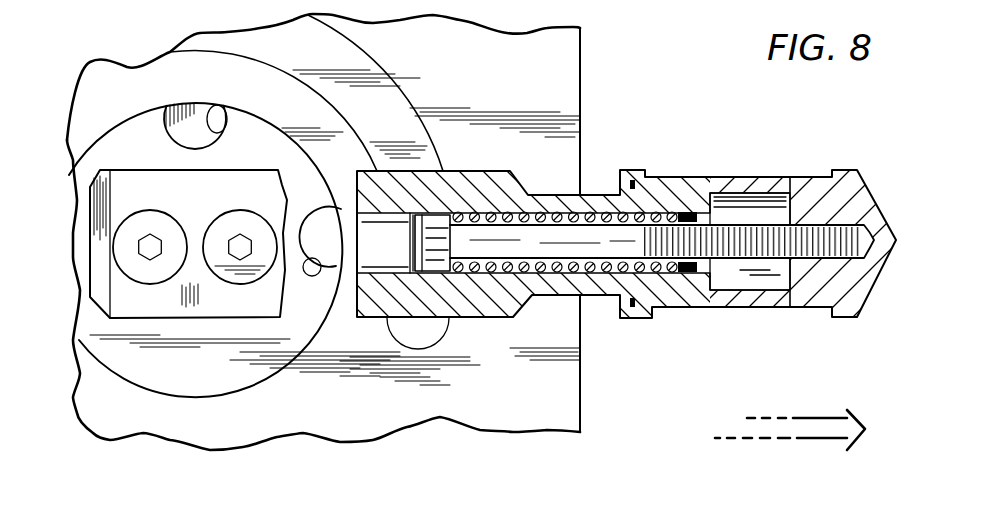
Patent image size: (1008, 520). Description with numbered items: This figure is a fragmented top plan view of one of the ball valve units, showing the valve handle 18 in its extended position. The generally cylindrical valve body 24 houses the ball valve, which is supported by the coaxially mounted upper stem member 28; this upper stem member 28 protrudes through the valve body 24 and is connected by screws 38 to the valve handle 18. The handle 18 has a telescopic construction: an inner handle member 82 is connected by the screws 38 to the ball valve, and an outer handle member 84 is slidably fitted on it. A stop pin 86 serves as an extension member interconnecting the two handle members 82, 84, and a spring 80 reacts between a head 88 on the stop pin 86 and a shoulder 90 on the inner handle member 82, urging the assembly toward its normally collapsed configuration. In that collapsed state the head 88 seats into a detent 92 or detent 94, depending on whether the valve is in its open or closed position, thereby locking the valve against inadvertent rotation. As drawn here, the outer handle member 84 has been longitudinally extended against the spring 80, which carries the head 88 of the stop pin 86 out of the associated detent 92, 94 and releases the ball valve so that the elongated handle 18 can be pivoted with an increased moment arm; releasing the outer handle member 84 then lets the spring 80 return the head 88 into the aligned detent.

The valve handle 18 is at (706, 322).
The valve body 24 is at (498, 418).
The upper stem member 28 is at (203, 300).
The screws 38 is at (155, 228).
The spring 80 is at (598, 214).
The inner handle member 82 is at (490, 304).
The outer handle member 84 is at (790, 309).
The stop pin 86 is at (748, 236).
The head 88 is at (431, 230).
The shoulder 90 is at (683, 212).
The detent 92 is at (310, 277).
The detent 94 is at (210, 101).